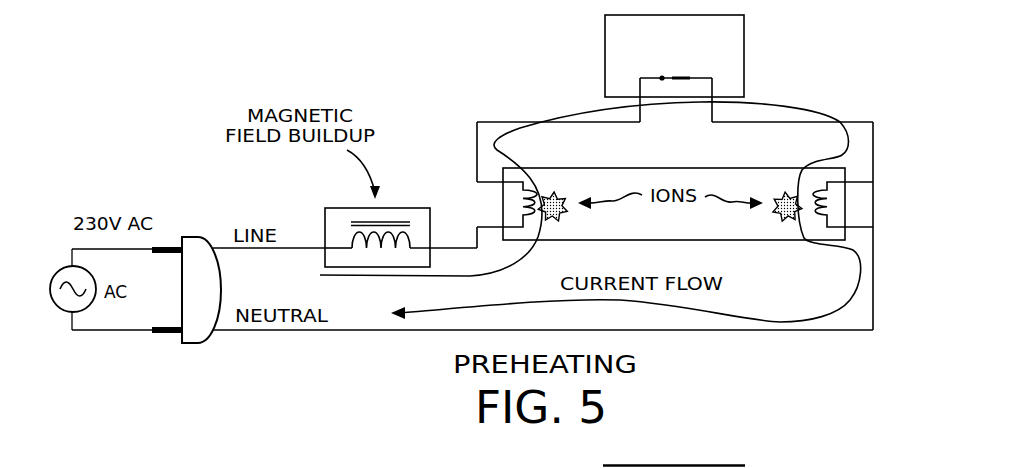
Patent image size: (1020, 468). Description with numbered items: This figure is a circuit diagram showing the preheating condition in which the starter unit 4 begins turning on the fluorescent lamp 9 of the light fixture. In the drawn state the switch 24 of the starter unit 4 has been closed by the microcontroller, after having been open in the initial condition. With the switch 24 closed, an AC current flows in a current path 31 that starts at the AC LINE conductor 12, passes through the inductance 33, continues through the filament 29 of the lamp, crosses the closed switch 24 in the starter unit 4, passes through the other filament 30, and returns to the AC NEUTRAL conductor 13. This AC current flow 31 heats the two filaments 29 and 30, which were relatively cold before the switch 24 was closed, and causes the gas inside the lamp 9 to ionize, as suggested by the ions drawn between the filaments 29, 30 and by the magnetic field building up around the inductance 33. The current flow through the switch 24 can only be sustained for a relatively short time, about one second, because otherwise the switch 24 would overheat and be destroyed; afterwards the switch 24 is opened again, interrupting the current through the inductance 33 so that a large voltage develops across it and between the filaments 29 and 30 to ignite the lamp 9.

The starter unit 4 is at (745, 50).
The fluorescent lamp 9 is at (672, 167).
The AC LINE conductor 12 is at (133, 252).
The AC NEUTRAL conductor 13 is at (125, 333).
The switch 24 is at (676, 77).
The filament 29 is at (522, 205).
The filament 30 is at (840, 205).
The current path 31 is at (356, 277).
The inductance 33 is at (398, 209).